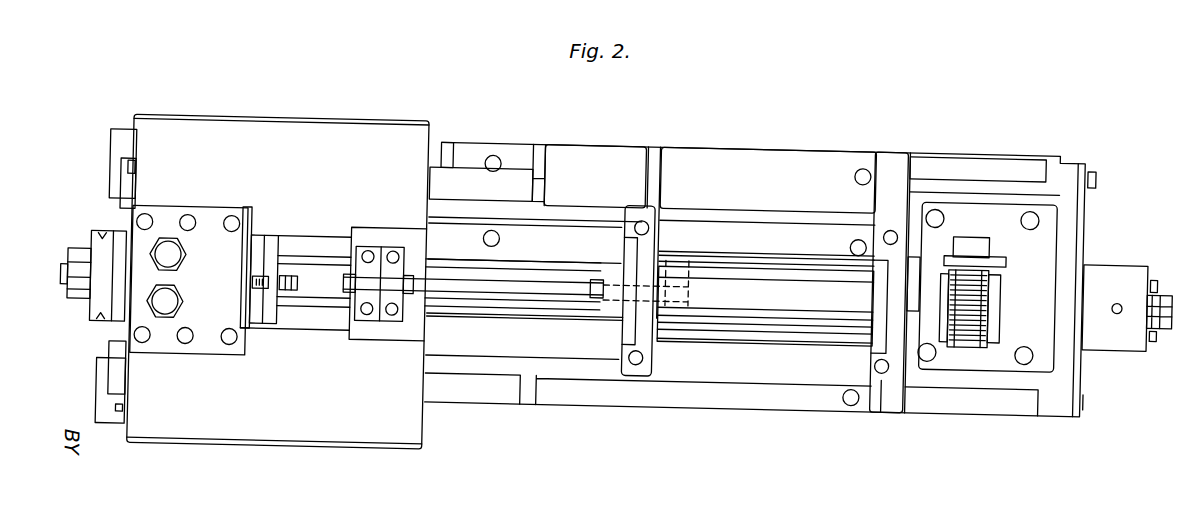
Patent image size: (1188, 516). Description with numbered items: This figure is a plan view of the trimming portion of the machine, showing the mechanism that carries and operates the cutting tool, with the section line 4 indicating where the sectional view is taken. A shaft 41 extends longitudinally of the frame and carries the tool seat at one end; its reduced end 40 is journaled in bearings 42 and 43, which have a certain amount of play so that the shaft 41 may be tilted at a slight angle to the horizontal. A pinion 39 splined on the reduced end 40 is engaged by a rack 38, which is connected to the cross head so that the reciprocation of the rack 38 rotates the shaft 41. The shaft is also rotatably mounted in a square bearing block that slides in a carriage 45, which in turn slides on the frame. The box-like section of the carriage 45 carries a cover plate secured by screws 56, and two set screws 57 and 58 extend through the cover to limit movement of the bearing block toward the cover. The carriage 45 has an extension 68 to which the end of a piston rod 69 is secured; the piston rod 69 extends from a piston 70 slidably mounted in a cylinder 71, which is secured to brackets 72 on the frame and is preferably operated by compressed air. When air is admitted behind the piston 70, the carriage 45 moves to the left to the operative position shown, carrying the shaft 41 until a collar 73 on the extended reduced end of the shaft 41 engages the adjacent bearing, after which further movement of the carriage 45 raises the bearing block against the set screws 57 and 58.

The section line 4- 4 is at (63, 281).
The rack 38 is at (970, 225).
The pinion 39 is at (995, 268).
The reduced end of shaft 40 is at (900, 257).
The shaft 41 is at (72, 311).
The bearing 42 is at (905, 349).
The bearing 43 is at (1033, 276).
The carriage 45 is at (404, 442).
The screws 56 is at (230, 220).
The set screw 57 is at (183, 308).
The set screw 58 is at (185, 261).
The extension 68 is at (375, 322).
The piston rod 69 is at (518, 290).
The piston 70 is at (690, 273).
The cylinder 71 is at (758, 350).
The brackets 72 is at (630, 326).
The collar 73 is at (1127, 261).